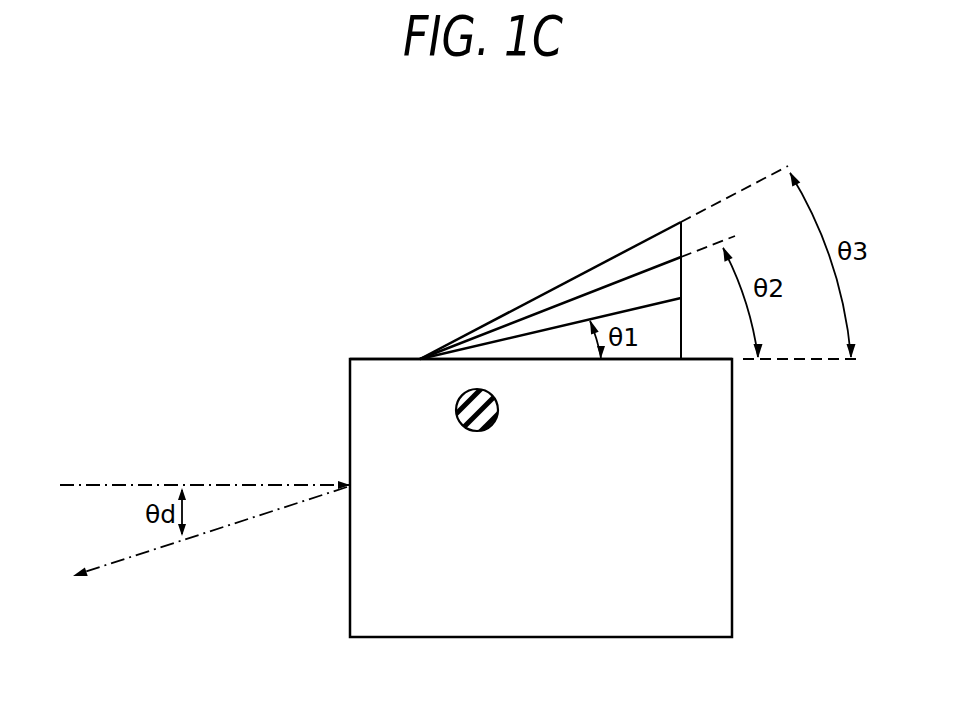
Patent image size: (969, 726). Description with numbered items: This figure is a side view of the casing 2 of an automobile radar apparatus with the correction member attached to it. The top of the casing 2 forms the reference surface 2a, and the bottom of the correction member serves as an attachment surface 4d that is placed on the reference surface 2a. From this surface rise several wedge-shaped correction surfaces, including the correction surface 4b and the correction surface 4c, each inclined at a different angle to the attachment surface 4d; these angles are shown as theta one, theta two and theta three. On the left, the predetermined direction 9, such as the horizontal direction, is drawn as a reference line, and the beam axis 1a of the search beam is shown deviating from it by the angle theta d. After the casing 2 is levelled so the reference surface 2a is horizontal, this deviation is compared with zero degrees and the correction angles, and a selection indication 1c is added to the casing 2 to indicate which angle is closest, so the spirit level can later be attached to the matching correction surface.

The casing 2 is at (623, 638).
The reference surface 2a is at (378, 357).
The selection indication 1c is at (479, 432).
The beam axis 1a is at (118, 560).
The predetermined direction 9 is at (100, 483).
The correction surface 4b is at (512, 323).
The correction surface 4c is at (632, 245).
The attachment surface 4d is at (655, 362).